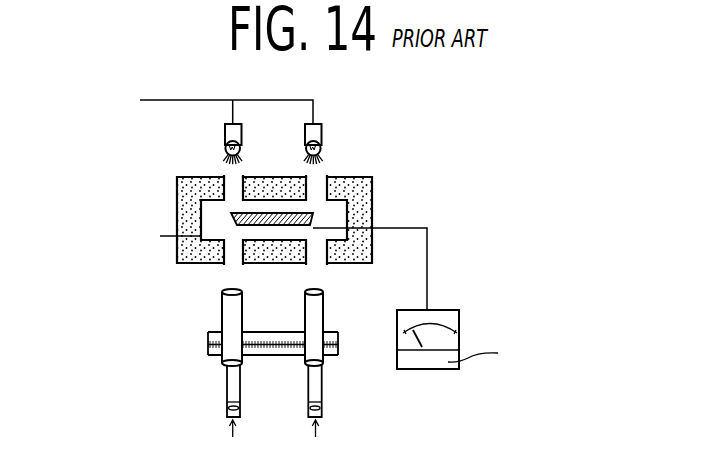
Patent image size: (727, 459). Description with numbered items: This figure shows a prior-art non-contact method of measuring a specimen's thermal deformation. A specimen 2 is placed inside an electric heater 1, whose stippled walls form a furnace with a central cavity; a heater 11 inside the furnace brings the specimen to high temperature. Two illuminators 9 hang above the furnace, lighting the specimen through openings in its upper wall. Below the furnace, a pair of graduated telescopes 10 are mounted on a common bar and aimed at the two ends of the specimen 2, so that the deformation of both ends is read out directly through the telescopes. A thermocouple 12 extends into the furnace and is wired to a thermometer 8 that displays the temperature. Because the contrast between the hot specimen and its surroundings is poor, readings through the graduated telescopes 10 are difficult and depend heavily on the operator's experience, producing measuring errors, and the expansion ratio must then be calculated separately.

The electric heater 1 is at (188, 203).
The specimen 2 is at (271, 211).
The thermometer 8 is at (457, 315).
The illuminator 9 is at (243, 144).
The graduated telescope 10 is at (242, 310).
The heater 11 is at (337, 207).
The thermocouple 12 is at (272, 231).